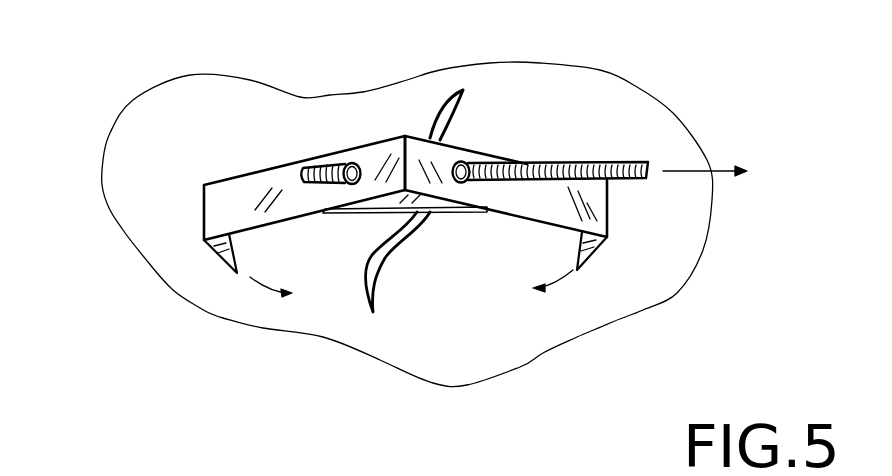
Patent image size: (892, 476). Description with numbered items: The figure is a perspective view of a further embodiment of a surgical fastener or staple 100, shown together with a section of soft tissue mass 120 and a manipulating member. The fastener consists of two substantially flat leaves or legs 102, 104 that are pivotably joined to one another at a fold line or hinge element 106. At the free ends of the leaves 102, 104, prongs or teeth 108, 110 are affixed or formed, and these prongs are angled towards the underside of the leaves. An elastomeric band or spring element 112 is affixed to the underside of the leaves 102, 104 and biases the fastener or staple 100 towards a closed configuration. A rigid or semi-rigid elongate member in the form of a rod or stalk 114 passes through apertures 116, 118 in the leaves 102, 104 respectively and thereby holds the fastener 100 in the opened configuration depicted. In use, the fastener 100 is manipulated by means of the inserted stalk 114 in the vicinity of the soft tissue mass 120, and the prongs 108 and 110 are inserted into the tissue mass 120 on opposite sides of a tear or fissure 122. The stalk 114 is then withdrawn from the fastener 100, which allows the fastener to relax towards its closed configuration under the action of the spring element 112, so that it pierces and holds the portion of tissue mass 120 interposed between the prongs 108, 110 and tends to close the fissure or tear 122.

The surgical fastener or staple 100 is at (433, 210).
The leaf or leg 102 is at (238, 190).
The leaf or leg 104 is at (538, 208).
The fold line or hinge element 106 is at (400, 140).
The prong or tooth 108 is at (238, 276).
The prong or tooth 110 is at (577, 270).
The elastomeric band or spring element 112 is at (370, 209).
The rod or stalk 114 is at (618, 160).
The aperture 116 is at (352, 162).
The aperture 118 is at (461, 162).
The soft tissue mass 120 is at (142, 125).
The tear or fissure 122 is at (365, 272).